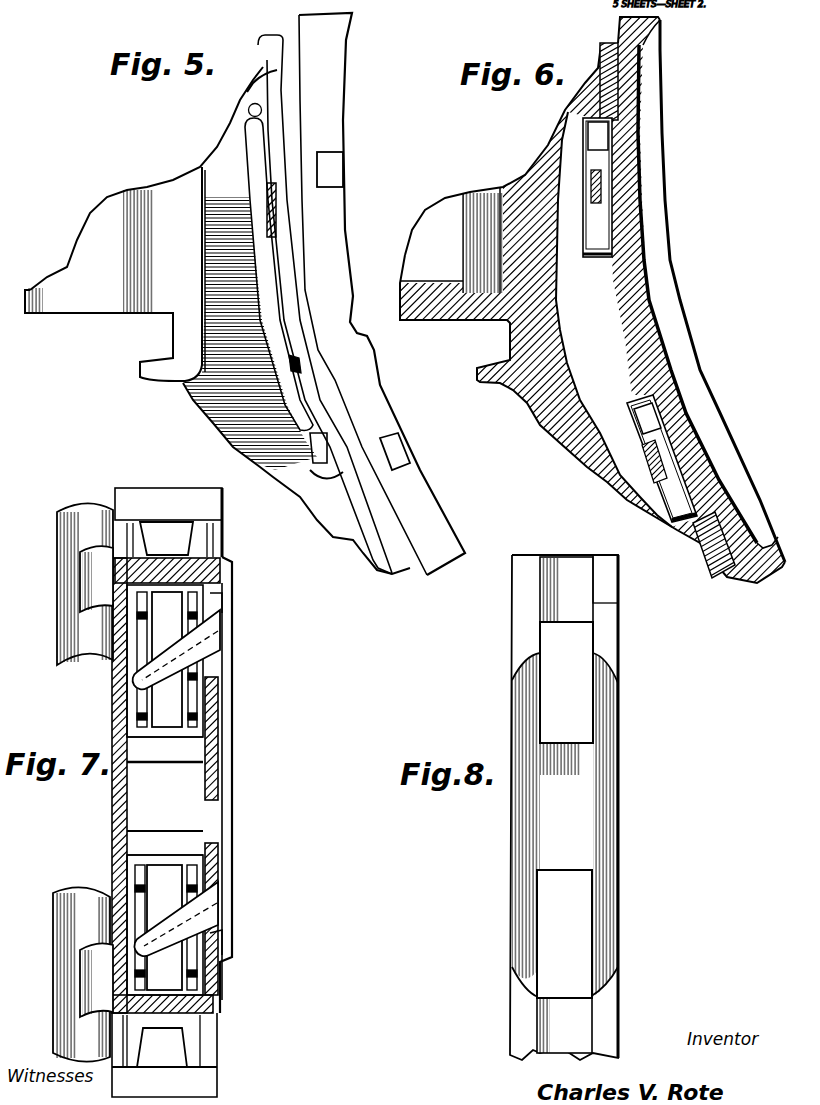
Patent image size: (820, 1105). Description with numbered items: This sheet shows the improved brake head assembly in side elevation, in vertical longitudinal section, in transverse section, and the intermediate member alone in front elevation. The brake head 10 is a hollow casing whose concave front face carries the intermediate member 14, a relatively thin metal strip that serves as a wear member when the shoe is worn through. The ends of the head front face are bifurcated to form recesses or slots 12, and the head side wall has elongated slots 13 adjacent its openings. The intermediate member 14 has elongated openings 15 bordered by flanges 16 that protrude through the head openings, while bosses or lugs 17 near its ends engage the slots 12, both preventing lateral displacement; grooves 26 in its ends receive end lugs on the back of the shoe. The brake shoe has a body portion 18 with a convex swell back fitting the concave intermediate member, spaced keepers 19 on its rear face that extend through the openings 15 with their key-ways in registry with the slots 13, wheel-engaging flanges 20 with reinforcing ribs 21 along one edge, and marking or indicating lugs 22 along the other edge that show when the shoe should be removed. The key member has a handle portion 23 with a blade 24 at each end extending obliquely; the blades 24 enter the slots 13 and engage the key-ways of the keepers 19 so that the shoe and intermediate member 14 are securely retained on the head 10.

In FIG. 5, the brake head 10 is at (217, 320).
In FIG. 6, the brake head 10 is at (410, 481).
In FIG. 7, the brake head 10 is at (220, 720).
In FIG. 7, the recesses or slots 12 is at (197, 528).
In FIG. 5, the elongated slots 13 is at (250, 107).
In FIG. 7, the elongated slots 13 is at (213, 603).
In FIG. 5, the intermediate member 14 is at (283, 102).
In FIG. 6, the intermediate member 14 is at (622, 330).
In FIG. 7, the intermediate member 14 is at (200, 698).
In FIG. 8, the intermediate member 14 is at (610, 797).
In FIG. 8, the elongated openings 15 is at (564, 934).
In FIG. 6, the flanges 16 is at (600, 133).
In FIG. 7, the flanges 16 is at (197, 672).
In FIG. 8, the flanges 16 is at (566, 682).
In FIG. 6, the bosses or lugs 17 is at (603, 45).
In FIG. 7, the bosses or lugs 17 is at (170, 522).
In FIG. 8, the bosses or lugs 17 is at (565, 805).
In FIG. 5, the body portion 18 is at (333, 208).
In FIG. 6, the body portion 18 is at (711, 291).
In FIG. 7, the body portion 18 is at (168, 492).
In FIG. 6, the keepers 19 is at (585, 148).
In FIG. 7, the keepers 19 is at (167, 594).
In FIG. 7, the wheel-engaging flanges 20 is at (60, 630).
In FIG. 7, the reinforcing ribs 21 is at (98, 580).
In FIG. 5, the marking or indicating lugs 22 is at (330, 163).
In FIG. 5, the handle portion 23 is at (258, 228).
In FIG. 7, the handle portion 23 is at (230, 773).
In FIG. 6, the blade 24 is at (600, 183).
In FIG. 7, the blade 24 is at (202, 633).
In FIG. 8, the recesses or grooves 26 is at (623, 605).